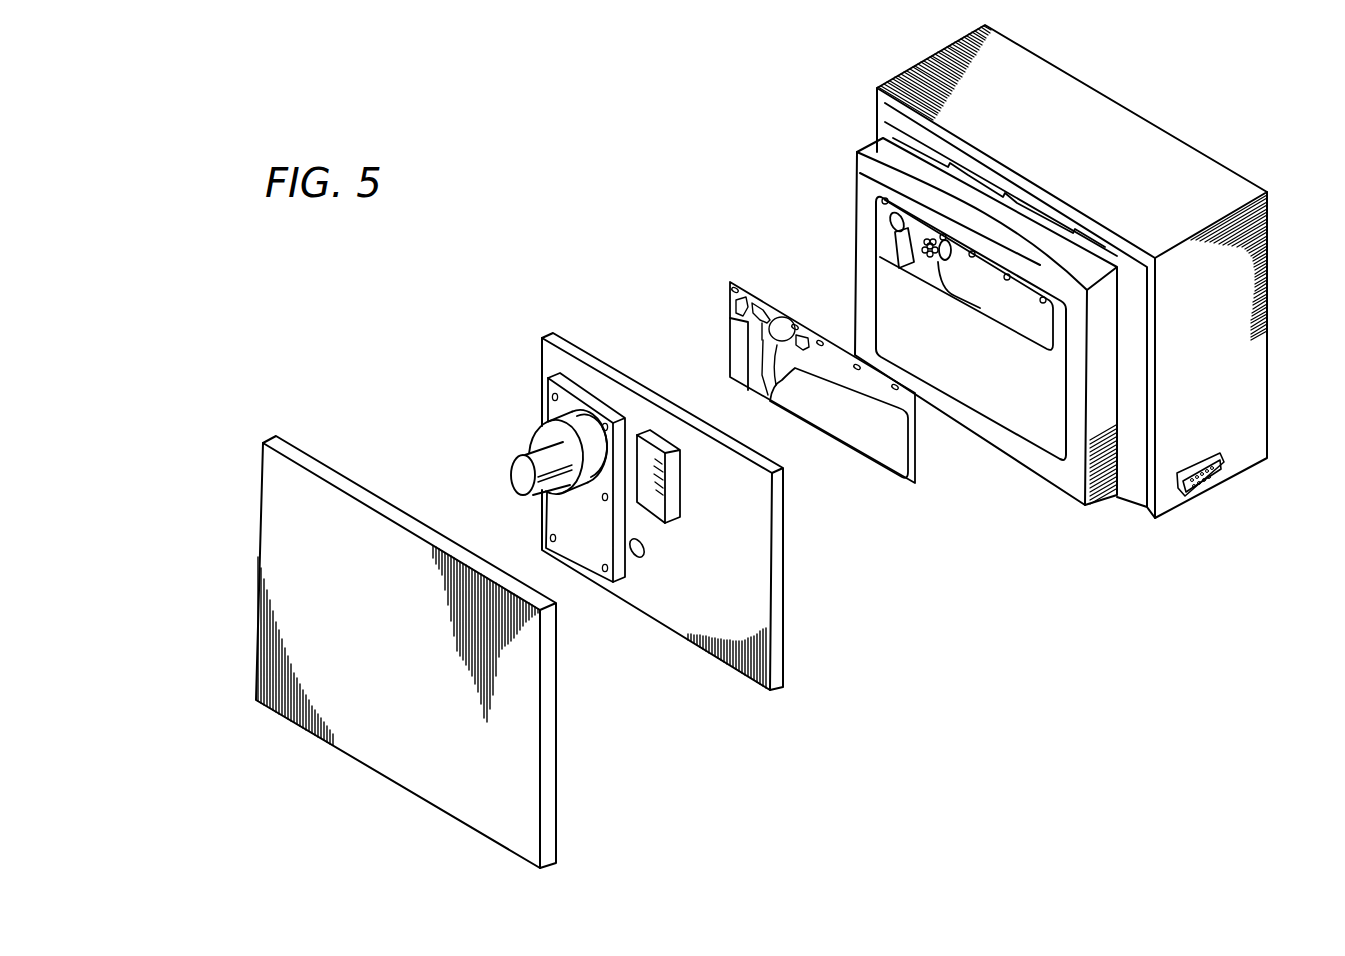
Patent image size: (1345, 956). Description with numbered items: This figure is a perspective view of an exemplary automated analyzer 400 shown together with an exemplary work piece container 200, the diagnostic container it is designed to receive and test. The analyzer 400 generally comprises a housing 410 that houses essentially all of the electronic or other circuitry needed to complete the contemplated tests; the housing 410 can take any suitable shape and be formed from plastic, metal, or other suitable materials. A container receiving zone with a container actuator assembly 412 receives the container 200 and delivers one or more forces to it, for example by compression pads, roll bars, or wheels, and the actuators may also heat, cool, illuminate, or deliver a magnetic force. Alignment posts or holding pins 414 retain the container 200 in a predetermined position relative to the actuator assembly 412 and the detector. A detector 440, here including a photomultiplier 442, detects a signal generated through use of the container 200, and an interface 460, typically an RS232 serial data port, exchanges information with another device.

The work piece container 200 is at (728, 303).
The analyzer 400 is at (938, 746).
The housing 410 is at (1133, 508).
The container actuator assembly 412 is at (887, 244).
The alignment posts 414 is at (943, 233).
The detector 440 is at (643, 560).
The photomultiplier 442 is at (526, 447).
The interface 460 is at (1224, 466).